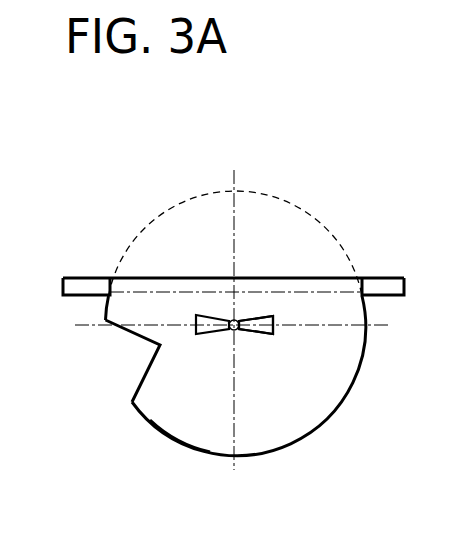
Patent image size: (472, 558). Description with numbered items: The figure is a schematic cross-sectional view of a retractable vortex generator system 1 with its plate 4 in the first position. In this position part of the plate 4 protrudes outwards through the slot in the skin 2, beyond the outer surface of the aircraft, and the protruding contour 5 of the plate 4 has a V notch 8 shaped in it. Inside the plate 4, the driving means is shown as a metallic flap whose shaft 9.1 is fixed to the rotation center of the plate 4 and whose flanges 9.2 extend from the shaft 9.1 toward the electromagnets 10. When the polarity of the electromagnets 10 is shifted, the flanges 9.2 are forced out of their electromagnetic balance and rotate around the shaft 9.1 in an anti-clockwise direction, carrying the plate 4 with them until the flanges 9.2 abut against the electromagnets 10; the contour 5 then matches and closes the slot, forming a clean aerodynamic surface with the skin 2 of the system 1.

The retractable vortex generator system 1 is at (131, 193).
The skin 2 is at (382, 283).
The plate 4 is at (117, 433).
The contour 5 is at (178, 441).
The V notch 8 is at (131, 353).
The electromagnets 10 is at (262, 318).
The shaft 9.1 is at (236, 333).
The flanges 9.2 is at (246, 331).